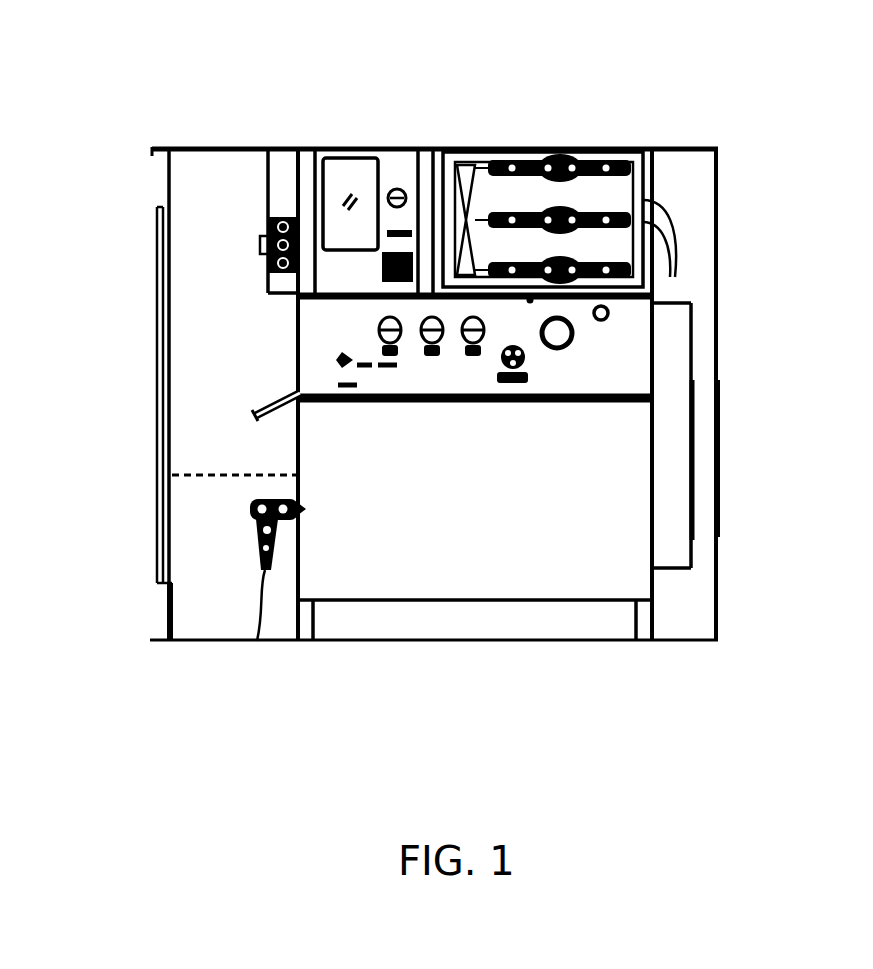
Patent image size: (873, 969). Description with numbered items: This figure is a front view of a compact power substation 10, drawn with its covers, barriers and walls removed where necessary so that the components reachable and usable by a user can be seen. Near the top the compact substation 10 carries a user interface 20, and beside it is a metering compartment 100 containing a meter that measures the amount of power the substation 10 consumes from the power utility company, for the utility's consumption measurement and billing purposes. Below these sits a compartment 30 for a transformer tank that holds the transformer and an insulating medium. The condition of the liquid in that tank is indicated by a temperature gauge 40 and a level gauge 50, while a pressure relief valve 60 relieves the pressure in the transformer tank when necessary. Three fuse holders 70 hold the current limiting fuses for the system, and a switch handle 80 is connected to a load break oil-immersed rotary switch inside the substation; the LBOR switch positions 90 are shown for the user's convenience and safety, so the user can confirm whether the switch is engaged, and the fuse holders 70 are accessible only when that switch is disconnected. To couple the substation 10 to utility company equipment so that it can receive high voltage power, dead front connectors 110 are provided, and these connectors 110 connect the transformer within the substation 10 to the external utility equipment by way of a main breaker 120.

The compact substation 10 is at (143, 673).
The user interface 20 is at (390, 147).
The compartment 30 is at (632, 572).
The temperature gauge 40 is at (578, 343).
The level gauge 50 is at (612, 312).
The pressure relief valve 60 is at (534, 302).
The fuse holders 70 is at (376, 326).
The switch handle 80 is at (250, 414).
The LBOR switch positions 90 is at (340, 362).
The metering compartment 100 is at (611, 164).
The dead front connectors 110 is at (250, 536).
The main breaker 120 is at (266, 185).